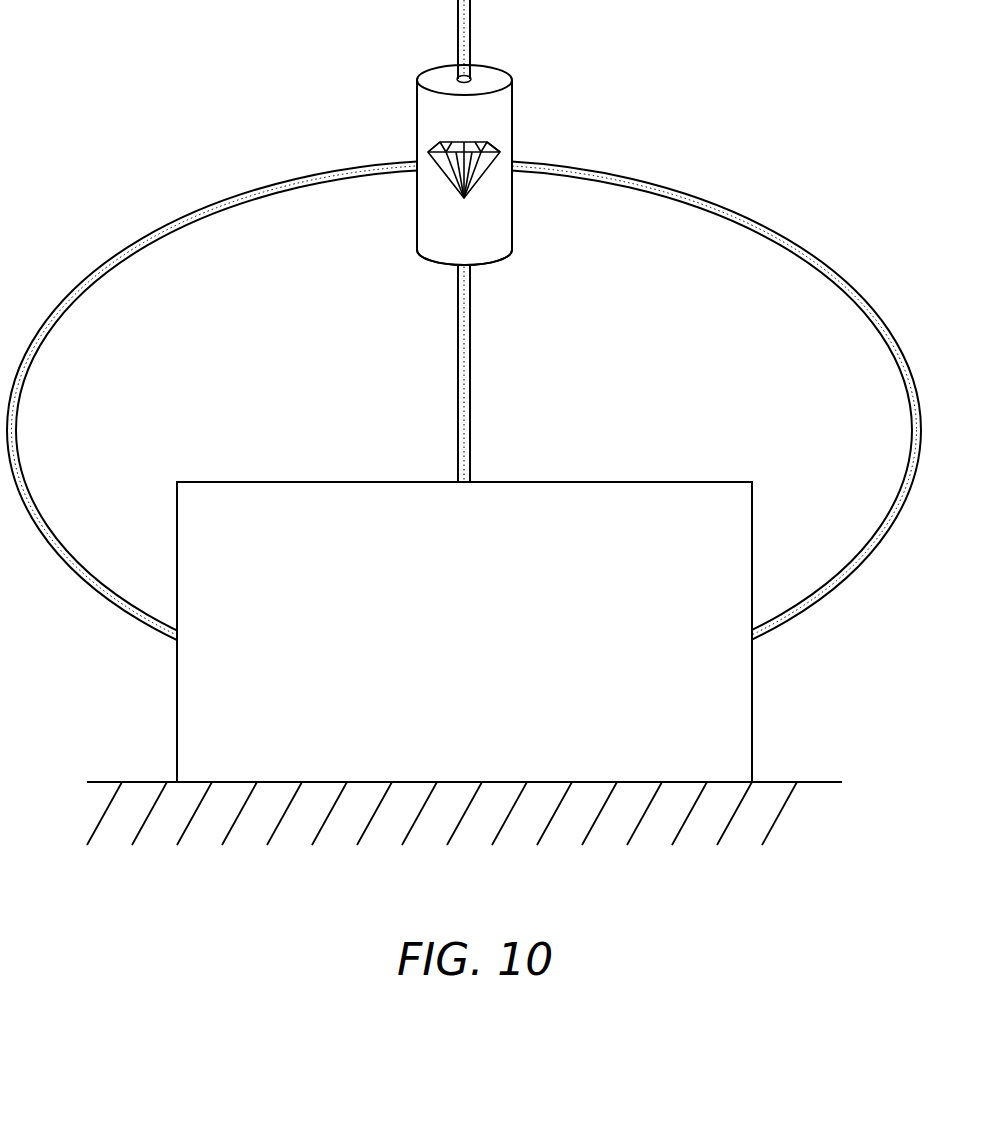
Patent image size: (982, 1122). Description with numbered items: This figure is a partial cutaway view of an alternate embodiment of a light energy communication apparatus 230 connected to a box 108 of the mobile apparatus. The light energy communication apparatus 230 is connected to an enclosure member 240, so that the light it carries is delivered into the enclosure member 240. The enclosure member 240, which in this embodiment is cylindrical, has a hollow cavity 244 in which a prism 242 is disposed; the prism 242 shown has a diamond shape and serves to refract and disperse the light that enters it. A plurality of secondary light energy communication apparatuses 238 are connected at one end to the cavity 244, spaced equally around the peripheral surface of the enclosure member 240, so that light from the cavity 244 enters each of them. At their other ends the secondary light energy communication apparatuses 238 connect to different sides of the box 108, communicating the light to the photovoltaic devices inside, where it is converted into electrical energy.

The box 108 is at (764, 693).
The light energy communication apparatus 230 is at (470, 5).
The secondary light energy communication apparatuses 238 is at (148, 237).
The enclosure member 240 is at (512, 107).
The prism 242 is at (483, 175).
The hollow cavity 244 is at (482, 220).